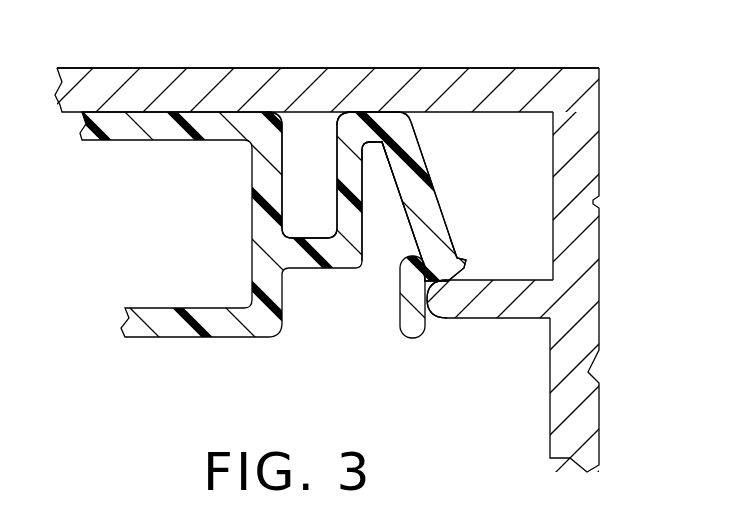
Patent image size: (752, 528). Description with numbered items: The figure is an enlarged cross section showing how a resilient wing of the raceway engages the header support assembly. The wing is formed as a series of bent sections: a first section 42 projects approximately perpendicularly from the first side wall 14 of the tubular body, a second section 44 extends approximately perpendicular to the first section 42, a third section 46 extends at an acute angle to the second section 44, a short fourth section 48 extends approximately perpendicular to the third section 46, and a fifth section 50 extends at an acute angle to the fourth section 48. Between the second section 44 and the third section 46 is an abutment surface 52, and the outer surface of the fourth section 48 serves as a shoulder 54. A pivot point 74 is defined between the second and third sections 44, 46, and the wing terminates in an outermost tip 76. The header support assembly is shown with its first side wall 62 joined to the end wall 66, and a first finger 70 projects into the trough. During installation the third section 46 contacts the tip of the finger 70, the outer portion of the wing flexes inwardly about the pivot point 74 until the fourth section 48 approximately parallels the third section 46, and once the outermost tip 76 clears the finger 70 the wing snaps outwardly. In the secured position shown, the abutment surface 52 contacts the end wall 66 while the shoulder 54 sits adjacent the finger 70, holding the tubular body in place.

The first side wall 14 is at (330, 90).
The first section 42 is at (335, 257).
The second section 44 is at (337, 175).
The third section 46 is at (427, 203).
The fourth section 48 is at (423, 263).
The fifth section 50 is at (403, 297).
The abutment surface 52 is at (443, 283).
The shoulder 54 is at (382, 110).
The first side wall 62 is at (587, 243).
The end wall 66 is at (175, 78).
The first finger 70 is at (523, 307).
The pivot point 74 is at (372, 148).
The outermost tip 76 is at (457, 263).